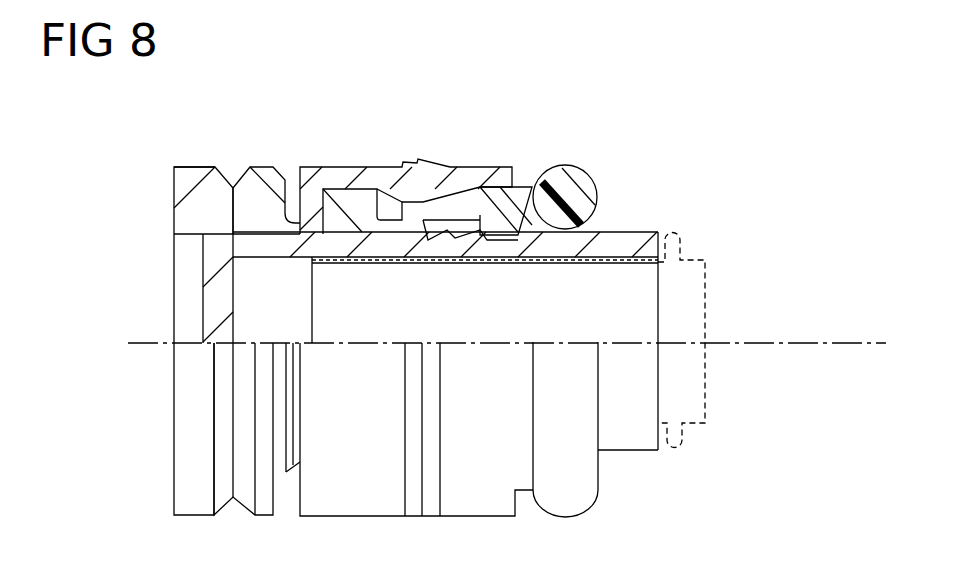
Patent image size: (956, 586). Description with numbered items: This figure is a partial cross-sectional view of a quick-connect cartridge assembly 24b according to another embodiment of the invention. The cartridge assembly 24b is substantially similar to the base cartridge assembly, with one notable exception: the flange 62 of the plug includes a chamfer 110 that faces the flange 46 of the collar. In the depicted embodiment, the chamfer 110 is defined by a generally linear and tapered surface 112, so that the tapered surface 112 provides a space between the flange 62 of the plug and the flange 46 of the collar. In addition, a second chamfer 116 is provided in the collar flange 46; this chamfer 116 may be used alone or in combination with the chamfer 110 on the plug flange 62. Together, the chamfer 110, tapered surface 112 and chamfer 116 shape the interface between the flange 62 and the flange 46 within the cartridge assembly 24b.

The cartridge assembly 24b is at (425, 90).
The chamfer 110 is at (221, 160).
The chamfer 116 is at (245, 158).
The flange 46 is at (260, 202).
The tapered surface 112 is at (222, 417).
The flange 62 is at (202, 457).